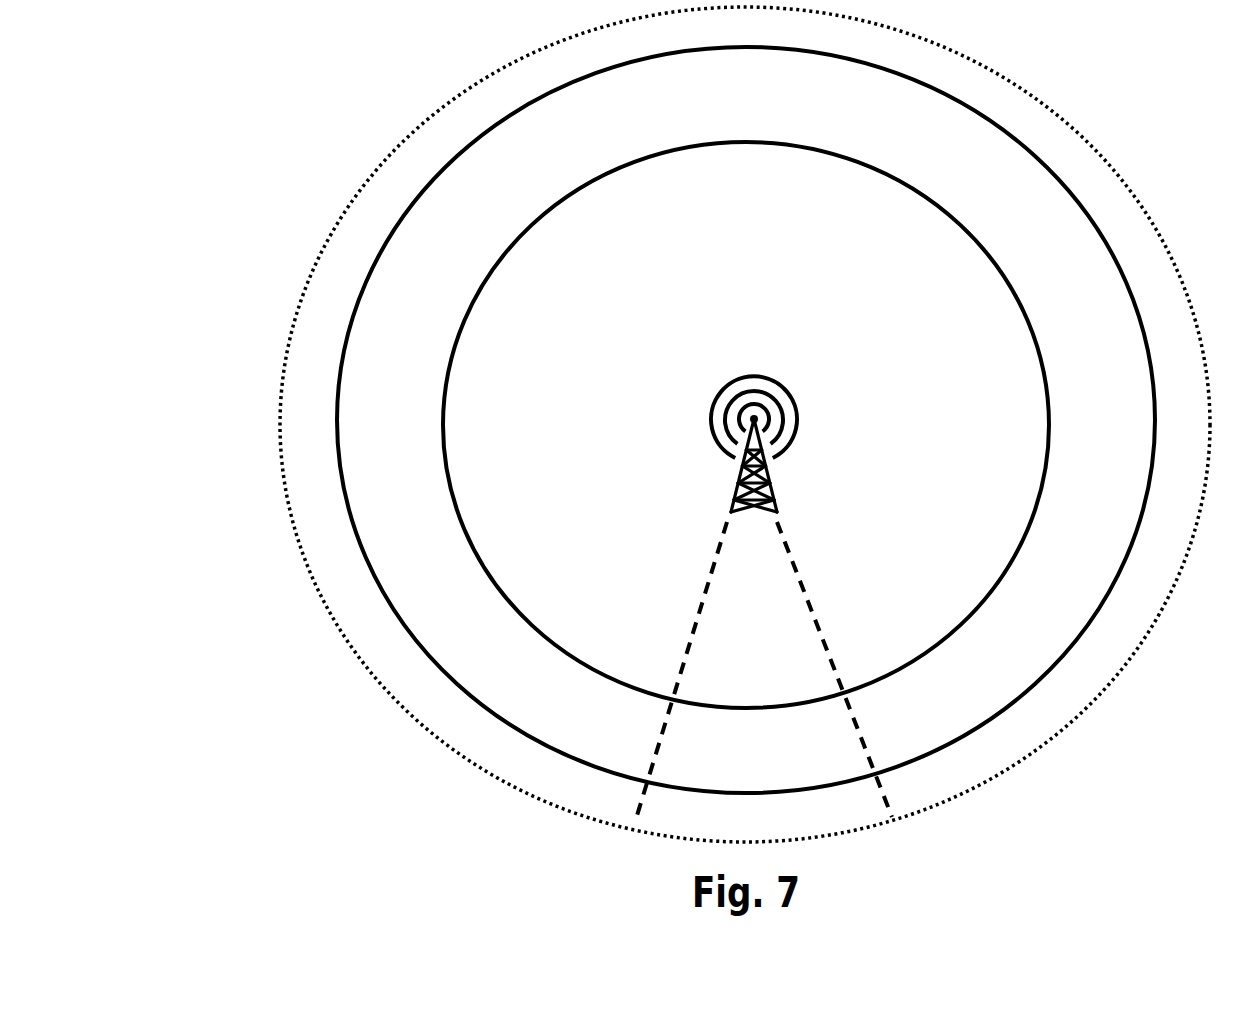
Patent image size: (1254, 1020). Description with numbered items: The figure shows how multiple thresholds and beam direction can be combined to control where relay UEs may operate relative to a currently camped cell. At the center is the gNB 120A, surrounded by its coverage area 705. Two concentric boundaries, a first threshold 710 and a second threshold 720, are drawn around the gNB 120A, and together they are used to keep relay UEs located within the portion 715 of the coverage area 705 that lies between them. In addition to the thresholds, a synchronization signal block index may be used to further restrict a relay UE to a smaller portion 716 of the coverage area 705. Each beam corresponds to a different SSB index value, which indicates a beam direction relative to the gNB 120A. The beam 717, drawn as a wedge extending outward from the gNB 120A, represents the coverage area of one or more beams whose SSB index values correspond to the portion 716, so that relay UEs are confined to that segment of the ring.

The coverage area 705 is at (460, 91).
The first threshold 710 is at (465, 318).
The second threshold 720 is at (336, 402).
The gNB 120A is at (797, 425).
The beam 717 is at (818, 608).
The portion of the coverage area 715 is at (507, 666).
The portion of the coverage area 716 is at (755, 743).